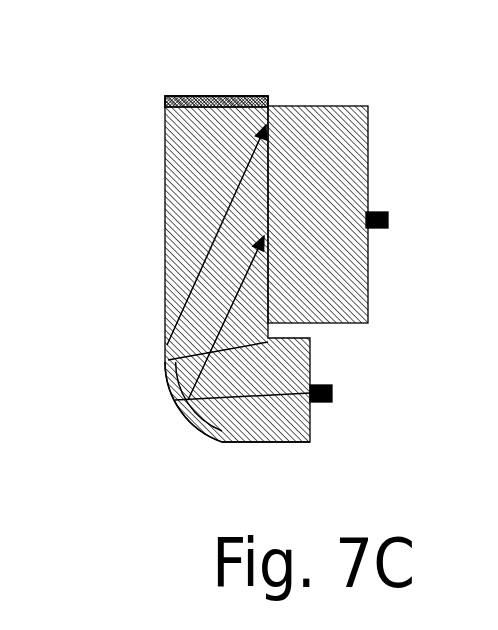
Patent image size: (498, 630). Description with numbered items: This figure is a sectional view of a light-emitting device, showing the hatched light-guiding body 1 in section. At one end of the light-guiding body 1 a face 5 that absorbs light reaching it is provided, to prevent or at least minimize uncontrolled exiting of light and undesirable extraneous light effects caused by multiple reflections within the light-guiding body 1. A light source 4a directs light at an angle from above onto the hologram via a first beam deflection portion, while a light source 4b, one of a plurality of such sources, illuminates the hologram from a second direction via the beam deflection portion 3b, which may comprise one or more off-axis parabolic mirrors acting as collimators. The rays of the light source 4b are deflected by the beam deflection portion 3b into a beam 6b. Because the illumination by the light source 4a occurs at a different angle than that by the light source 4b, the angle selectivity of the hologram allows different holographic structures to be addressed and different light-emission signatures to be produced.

The light-guiding body 1 is at (145, 273).
The face that absorbs light 5 is at (148, 99).
The light source 4a is at (380, 195).
The light source 4b is at (352, 399).
The beam deflection portion 3b is at (158, 402).
The beam 6b is at (273, 428).